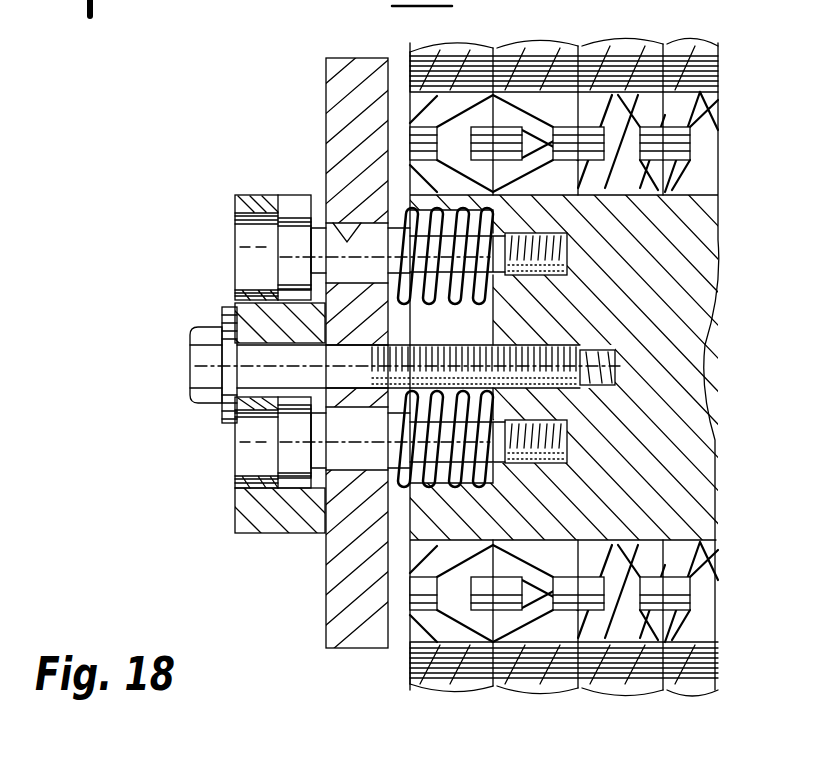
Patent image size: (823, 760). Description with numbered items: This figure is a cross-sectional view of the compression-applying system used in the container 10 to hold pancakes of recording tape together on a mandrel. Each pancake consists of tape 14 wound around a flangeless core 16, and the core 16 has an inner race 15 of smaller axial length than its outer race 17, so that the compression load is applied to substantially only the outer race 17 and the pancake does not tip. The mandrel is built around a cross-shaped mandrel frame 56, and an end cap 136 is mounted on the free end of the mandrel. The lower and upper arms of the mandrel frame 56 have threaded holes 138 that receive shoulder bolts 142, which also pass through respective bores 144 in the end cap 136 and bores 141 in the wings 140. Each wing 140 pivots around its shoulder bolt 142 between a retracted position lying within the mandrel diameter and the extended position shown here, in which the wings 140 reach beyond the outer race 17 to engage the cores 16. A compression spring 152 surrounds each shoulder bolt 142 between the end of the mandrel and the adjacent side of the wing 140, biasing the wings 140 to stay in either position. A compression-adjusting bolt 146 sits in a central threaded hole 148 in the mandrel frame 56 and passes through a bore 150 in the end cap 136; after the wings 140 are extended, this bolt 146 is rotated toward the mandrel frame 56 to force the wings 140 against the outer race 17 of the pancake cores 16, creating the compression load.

The container 10 is at (380, 6).
The tape 14 is at (622, 50).
The inner race 15 is at (655, 557).
The core 16 is at (652, 117).
The outer race 17 is at (673, 636).
The mandrel frame 56 is at (693, 290).
The end cap 136 is at (260, 510).
The threaded holes 138 is at (567, 246).
The wings 140 is at (346, 114).
The bores 141 is at (328, 222).
The shoulder bolts 142 is at (331, 250).
The bores 144 is at (250, 292).
The compression-adjusting bolt 146 is at (265, 369).
The central threaded hole 148 is at (614, 368).
The bore 150 is at (226, 340).
The compression spring 152 is at (472, 288).